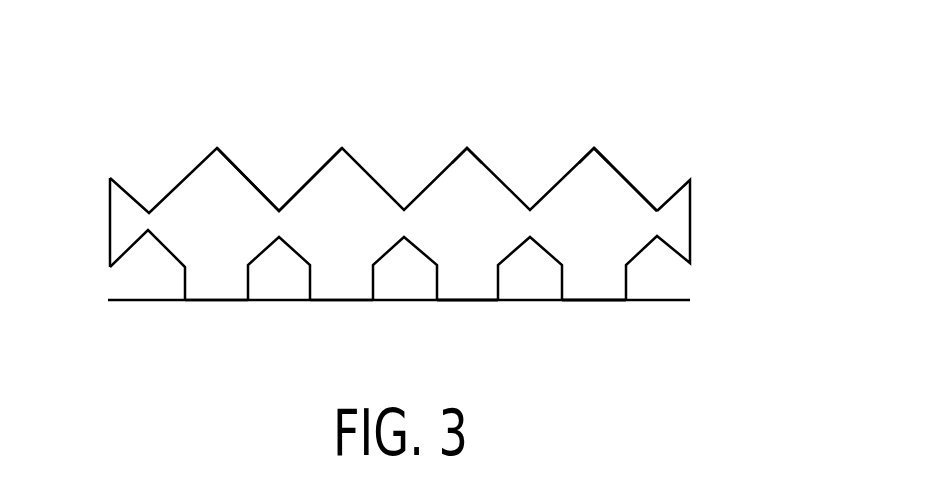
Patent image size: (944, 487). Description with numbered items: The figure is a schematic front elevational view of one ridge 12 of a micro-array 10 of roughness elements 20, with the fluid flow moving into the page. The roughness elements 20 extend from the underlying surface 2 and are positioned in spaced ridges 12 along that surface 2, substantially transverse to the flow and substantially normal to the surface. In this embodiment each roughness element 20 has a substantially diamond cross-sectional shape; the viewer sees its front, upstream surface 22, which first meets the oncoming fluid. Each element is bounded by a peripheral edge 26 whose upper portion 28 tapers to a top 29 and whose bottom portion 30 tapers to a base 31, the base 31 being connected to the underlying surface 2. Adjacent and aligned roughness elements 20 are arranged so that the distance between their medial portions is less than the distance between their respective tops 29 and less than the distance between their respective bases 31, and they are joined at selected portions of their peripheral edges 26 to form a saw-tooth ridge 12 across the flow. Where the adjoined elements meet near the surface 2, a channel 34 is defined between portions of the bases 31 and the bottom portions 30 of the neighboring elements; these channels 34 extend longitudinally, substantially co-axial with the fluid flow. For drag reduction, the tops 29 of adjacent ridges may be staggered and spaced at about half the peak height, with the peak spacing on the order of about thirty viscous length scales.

The surface 2 is at (669, 330).
The micro-array 10 is at (131, 134).
The ridge 12 is at (86, 255).
The roughness element 20 is at (215, 257).
The front, upstream surface 22 is at (710, 73).
The peripheral edge 26 is at (308, 161).
The upper portion 28 is at (630, 182).
The top 29 is at (485, 132).
The bottom portion 30 is at (580, 250).
The base 31 is at (481, 282).
The channel 34 is at (143, 280).